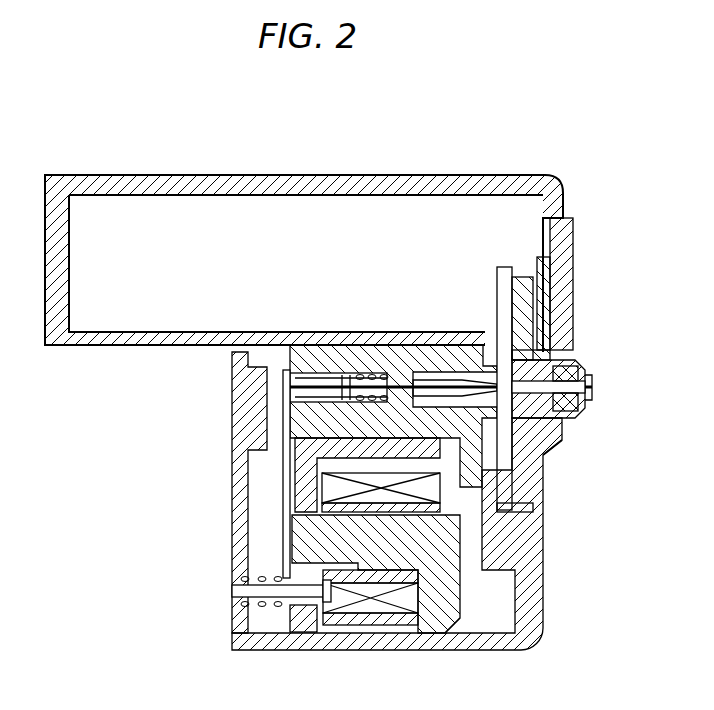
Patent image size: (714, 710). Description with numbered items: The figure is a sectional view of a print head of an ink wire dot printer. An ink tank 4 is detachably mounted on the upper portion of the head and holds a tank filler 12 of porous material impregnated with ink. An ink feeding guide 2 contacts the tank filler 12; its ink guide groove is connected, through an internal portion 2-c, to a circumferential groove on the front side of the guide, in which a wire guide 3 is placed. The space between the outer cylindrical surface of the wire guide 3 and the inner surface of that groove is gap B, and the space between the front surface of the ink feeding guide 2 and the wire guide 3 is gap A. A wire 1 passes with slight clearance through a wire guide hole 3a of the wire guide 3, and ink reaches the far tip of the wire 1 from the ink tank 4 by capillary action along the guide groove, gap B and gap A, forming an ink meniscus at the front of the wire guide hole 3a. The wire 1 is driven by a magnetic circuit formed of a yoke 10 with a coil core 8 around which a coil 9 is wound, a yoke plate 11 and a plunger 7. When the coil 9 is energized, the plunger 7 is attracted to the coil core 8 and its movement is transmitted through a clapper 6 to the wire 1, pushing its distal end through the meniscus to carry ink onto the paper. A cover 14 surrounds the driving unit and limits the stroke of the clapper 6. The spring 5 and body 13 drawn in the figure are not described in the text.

The wire 1 is at (455, 379).
The ink feeding guide 2 is at (520, 485).
The internal portion 2-c is at (500, 360).
The wire guide 3 is at (578, 415).
The wire guide hole 3a is at (586, 402).
The ink tank 4 is at (548, 188).
The spring 5 is at (415, 378).
The clapper 6 is at (290, 513).
The plunger 7 is at (347, 565).
The coil core 8 is at (450, 545).
The coil 9 is at (405, 600).
The yoke 10 is at (455, 615).
The yoke plate 11 is at (295, 472).
The tank filler 12 is at (413, 210).
The valve body 13 is at (337, 362).
The cover 14 is at (245, 635).
The gap A is at (548, 440).
The gap B is at (570, 362).